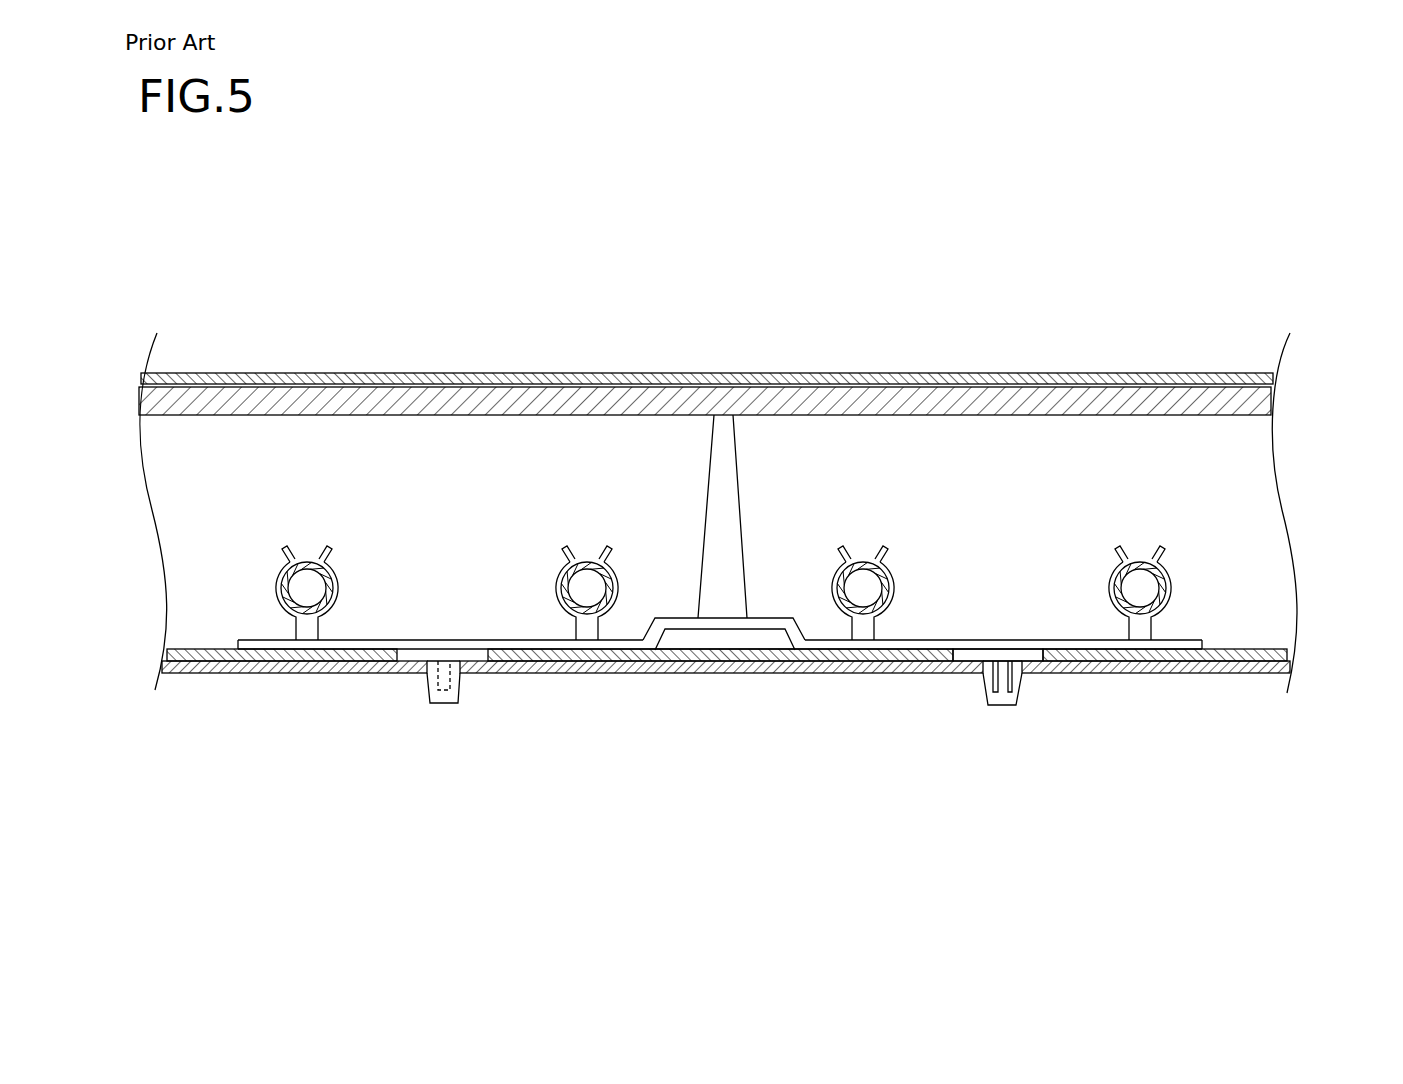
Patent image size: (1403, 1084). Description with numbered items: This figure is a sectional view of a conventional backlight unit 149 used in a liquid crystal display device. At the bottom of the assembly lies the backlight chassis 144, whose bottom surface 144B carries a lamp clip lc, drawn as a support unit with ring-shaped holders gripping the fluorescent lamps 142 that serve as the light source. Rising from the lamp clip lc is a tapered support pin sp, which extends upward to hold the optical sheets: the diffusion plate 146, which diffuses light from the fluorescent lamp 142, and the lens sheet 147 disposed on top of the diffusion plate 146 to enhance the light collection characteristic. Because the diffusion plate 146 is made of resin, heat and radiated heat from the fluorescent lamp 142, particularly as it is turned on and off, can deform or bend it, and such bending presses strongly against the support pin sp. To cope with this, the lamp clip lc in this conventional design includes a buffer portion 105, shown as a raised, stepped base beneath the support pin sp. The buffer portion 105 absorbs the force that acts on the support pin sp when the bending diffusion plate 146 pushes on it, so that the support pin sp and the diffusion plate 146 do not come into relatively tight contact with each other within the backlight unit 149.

The backlight unit 149 is at (1292, 298).
The lens sheet 147 is at (1272, 375).
The diffusion plate 146 is at (1270, 400).
The support pin sp is at (722, 516).
The lamp clip Ic is at (928, 516).
The buffer portion 105 is at (772, 623).
The fluorescent lamp 142 is at (1150, 586).
The bottom surface 144B is at (1287, 650).
The backlight chassis 144 is at (1282, 670).